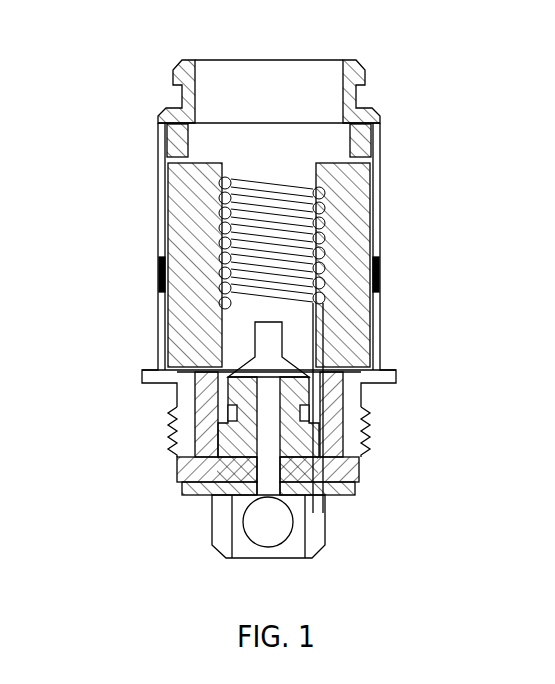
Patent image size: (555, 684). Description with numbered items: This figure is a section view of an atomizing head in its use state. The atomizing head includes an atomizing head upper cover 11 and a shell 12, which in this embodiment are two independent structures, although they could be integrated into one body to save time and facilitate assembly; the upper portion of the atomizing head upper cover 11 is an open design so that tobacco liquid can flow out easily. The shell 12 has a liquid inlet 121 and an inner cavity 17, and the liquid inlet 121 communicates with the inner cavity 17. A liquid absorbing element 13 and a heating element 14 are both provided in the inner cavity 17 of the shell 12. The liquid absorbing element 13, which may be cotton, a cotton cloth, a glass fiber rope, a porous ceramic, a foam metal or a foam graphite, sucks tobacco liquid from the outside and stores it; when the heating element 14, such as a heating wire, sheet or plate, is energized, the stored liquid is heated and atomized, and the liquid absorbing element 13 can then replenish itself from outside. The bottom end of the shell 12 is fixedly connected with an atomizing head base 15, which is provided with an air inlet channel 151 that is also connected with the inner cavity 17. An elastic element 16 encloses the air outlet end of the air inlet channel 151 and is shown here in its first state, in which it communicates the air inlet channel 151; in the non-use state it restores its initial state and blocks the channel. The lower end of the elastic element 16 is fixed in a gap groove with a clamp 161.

The atomizing head upper cover 11 is at (166, 113).
The inner cavity 17 is at (216, 150).
The liquid inlet 121 is at (157, 270).
The shell 12 is at (156, 369).
The liquid absorbing element 13 is at (340, 190).
The heating element 14 is at (317, 275).
The elastic element 16 is at (283, 355).
The clamp 161 is at (303, 413).
The atomizing head base 15 is at (298, 465).
The air inlet channel 151 is at (265, 522).